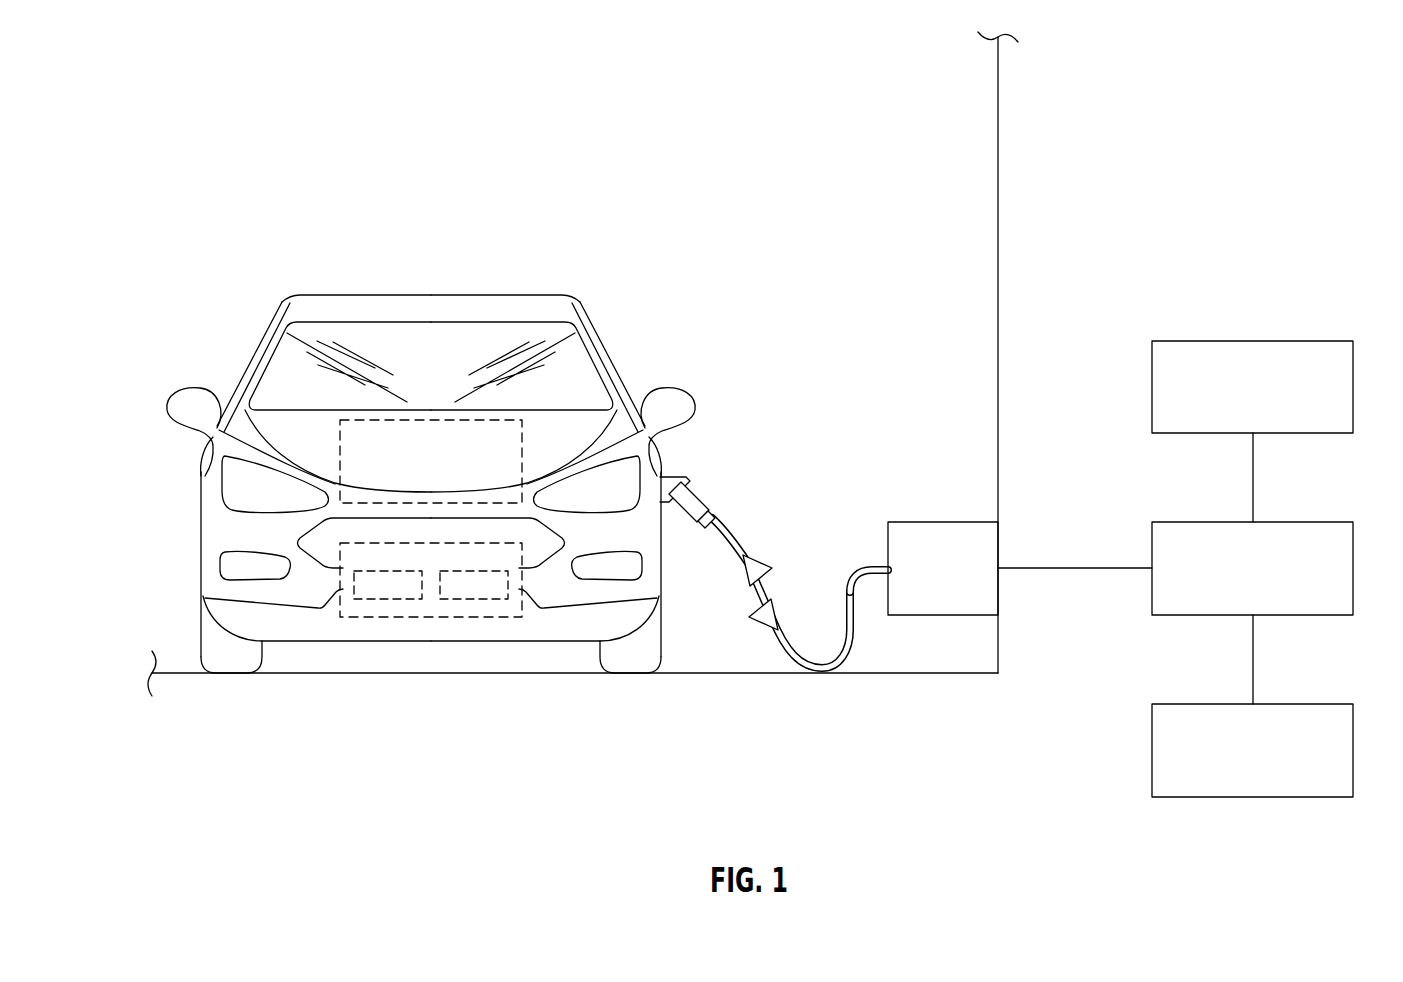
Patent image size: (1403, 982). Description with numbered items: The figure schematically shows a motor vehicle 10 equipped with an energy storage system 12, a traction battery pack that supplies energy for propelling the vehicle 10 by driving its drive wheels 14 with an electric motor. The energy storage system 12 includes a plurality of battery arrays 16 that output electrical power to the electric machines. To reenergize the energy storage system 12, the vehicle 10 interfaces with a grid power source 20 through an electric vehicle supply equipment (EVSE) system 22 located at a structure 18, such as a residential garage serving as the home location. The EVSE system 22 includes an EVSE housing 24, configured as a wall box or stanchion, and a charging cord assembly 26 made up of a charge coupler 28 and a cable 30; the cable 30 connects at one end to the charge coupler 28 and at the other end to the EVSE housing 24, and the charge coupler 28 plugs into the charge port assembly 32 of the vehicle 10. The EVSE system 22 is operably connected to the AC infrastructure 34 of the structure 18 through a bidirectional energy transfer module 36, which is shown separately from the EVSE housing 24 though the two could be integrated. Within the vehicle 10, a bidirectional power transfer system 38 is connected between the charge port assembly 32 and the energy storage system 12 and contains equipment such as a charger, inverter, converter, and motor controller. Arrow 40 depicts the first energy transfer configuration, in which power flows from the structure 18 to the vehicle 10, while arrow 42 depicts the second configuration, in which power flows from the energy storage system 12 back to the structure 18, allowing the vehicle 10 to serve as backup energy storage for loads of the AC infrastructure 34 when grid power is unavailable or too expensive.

The motor vehicle 10 is at (270, 205).
The energy storage system 12 is at (445, 632).
The drive wheels 14 is at (225, 655).
The battery arrays 16 is at (393, 600).
The structure 18 is at (986, 195).
The grid power source 20 is at (1208, 704).
The electric vehicle supply equipment (EVSE) system 22 is at (862, 555).
The EVSE housing 24 is at (950, 520).
The charging cord assembly 26 is at (731, 502).
The charge coupler 28 is at (668, 490).
The cable 30 is at (803, 654).
The charge port assembly 32 is at (694, 438).
The AC infrastructure 34 is at (1208, 340).
The bidirectional energy transfer module 36 is at (1208, 522).
The bidirectional power transfer system 38 is at (428, 418).
The arrow 40 is at (760, 568).
The arrow 42 is at (758, 624).